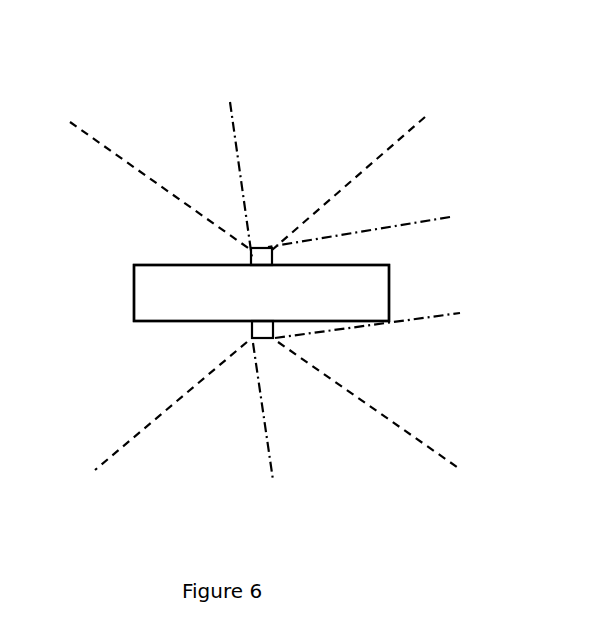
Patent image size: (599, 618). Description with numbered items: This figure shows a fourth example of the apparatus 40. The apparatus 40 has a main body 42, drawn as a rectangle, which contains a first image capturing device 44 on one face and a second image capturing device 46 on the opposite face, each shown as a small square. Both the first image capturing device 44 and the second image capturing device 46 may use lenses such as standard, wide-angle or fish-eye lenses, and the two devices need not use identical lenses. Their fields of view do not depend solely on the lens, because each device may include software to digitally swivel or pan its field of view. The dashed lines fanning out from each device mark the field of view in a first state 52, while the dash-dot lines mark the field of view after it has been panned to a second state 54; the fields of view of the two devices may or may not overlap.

The apparatus 40 is at (380, 283).
The main body 42 is at (145, 297).
The first image capturing device 44 is at (247, 258).
The second image capturing device 46 is at (253, 332).
The first state 52 is at (347, 157).
The second state 54 is at (248, 188).